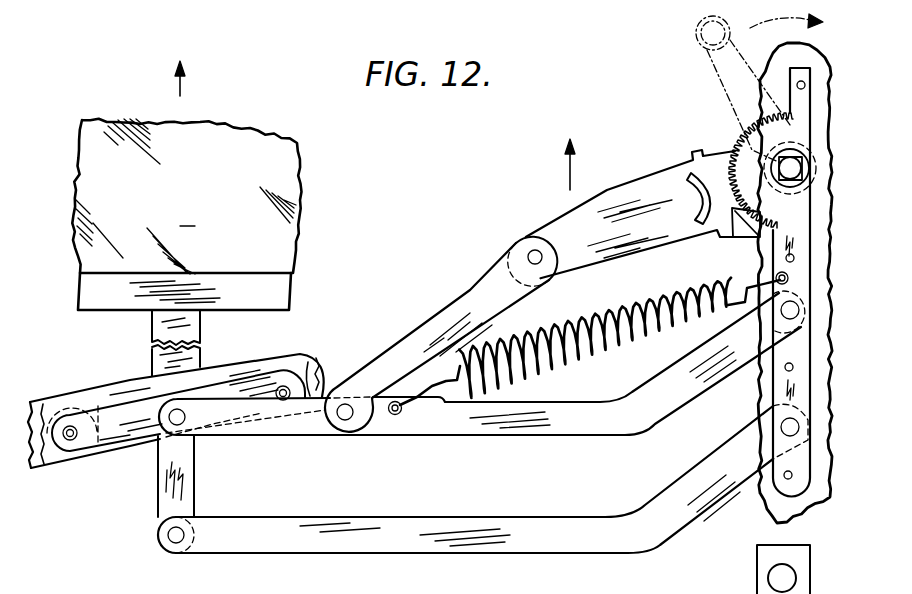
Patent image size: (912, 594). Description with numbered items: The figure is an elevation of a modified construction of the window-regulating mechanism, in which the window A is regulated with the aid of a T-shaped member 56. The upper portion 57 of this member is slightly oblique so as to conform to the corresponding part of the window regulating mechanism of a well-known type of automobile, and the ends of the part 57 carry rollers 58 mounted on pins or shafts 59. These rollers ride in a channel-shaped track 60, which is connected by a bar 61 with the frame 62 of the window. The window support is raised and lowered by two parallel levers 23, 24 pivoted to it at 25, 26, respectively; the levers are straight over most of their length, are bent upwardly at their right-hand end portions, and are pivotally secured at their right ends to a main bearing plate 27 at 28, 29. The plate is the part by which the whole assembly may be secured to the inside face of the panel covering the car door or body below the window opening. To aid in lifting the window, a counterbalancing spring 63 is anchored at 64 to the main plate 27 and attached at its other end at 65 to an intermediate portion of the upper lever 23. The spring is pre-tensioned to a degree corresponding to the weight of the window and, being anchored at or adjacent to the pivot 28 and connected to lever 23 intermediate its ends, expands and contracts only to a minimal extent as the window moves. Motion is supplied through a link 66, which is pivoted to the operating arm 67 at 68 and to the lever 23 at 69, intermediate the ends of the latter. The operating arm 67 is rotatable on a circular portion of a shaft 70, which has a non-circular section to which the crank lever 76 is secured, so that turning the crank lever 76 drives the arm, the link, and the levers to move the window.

The lever 23 is at (613, 433).
The lever 24 is at (560, 547).
The pivot 25 is at (157, 432).
The pivot 26 is at (158, 534).
The main bearing plate 27 is at (757, 503).
The pivot 28 is at (784, 314).
The pivot 29 is at (784, 431).
The T-shaped member 56 is at (197, 473).
The upper portion 57 is at (130, 400).
The rollers 58 is at (52, 447).
The pins or shafts 59 is at (72, 446).
The track 60 is at (36, 406).
The bar 61 is at (204, 350).
The frame 62 is at (297, 298).
The counterbalancing spring 63 is at (580, 325).
The anchor 64 is at (777, 275).
The attachment point 65 is at (395, 415).
The link 66 is at (463, 297).
The operating arm 67 is at (595, 239).
The pivot 68 is at (533, 250).
The pivot 69 is at (345, 404).
The shaft 70 is at (778, 190).
The crank lever 76 is at (722, 80).
The window A is at (186, 196).